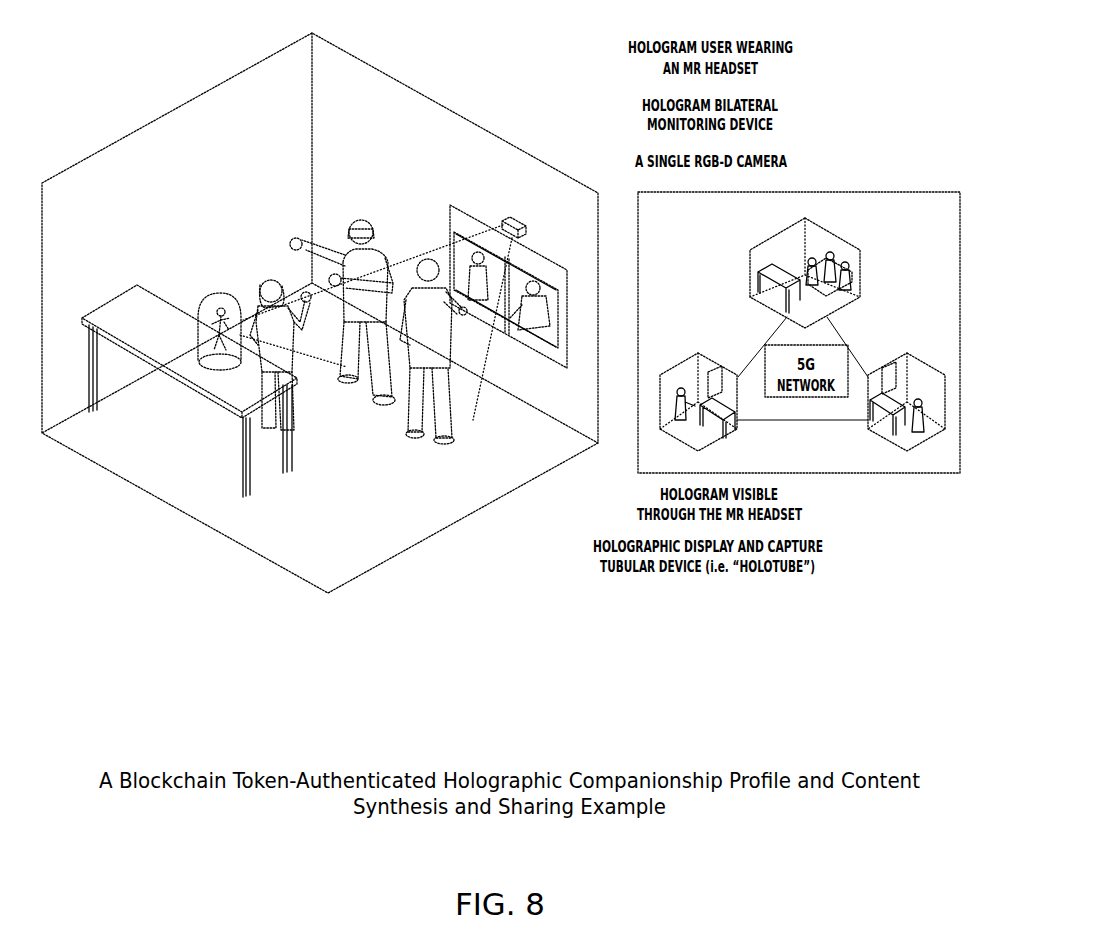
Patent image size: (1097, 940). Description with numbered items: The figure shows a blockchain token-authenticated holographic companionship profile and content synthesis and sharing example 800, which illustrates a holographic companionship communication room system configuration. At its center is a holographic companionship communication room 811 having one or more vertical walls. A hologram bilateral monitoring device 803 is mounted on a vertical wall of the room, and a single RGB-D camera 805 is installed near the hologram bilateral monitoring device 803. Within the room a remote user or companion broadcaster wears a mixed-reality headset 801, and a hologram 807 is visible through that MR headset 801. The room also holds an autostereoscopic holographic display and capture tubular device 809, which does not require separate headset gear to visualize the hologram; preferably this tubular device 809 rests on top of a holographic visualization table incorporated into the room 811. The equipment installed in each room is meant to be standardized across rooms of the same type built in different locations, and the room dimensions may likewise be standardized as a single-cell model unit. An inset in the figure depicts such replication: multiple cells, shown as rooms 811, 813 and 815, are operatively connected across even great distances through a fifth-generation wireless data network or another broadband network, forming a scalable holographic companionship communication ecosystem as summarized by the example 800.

The blockchain token-authenticated holographic companionship profile and content syn 800 is at (518, 707).
The mixed-reality (MR) headset 801 is at (368, 202).
The hologram bilateral monitoring device 803 is at (470, 202).
The single RGB-D camera 805 is at (522, 215).
The hologram 807 is at (311, 401).
The autostereoscopic holographic display and capture tubular device 809 is at (218, 383).
The holographic companionship communication room 811 is at (222, 297).
The holographic companionship communication room 813 is at (698, 386).
The holographic companionship communication room 815 is at (906, 386).